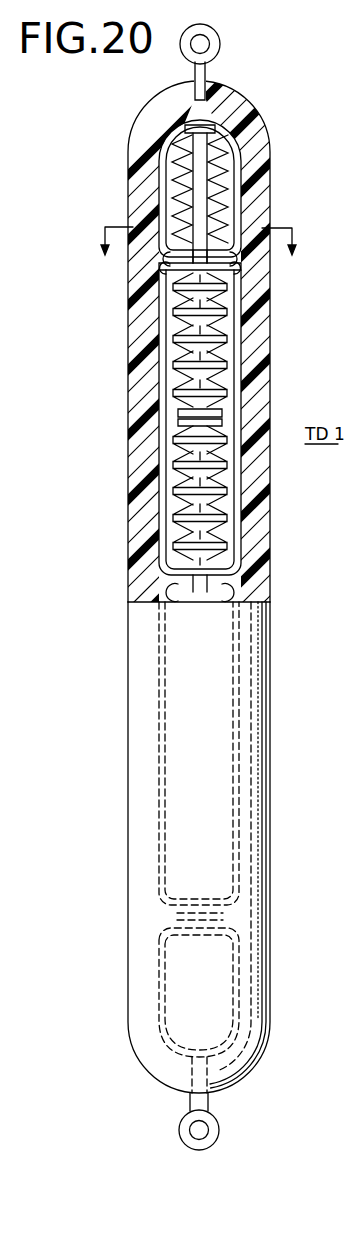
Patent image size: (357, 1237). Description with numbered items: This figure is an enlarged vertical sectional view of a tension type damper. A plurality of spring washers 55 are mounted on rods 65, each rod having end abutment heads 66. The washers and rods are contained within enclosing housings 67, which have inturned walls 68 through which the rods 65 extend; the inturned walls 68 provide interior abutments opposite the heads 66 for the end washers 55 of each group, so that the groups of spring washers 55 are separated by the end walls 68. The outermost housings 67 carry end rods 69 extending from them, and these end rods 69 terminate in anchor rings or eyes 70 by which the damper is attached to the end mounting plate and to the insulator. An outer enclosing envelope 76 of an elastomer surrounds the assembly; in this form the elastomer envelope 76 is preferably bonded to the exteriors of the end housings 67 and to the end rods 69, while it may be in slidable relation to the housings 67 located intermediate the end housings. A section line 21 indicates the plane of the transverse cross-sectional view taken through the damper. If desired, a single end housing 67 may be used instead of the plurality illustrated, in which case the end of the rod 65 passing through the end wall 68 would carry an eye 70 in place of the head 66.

The section line 21 is at (201, 254).
The spring washers 55 is at (214, 168).
The rods 65 is at (201, 193).
The end abutment heads 66 is at (214, 126).
The enclosing housings 67 is at (238, 188).
The inturned walls 68 is at (222, 250).
The end rods 69 is at (201, 87).
The anchor rings or eyes 70 is at (218, 44).
The outer enclosing envelope 76 is at (257, 363).